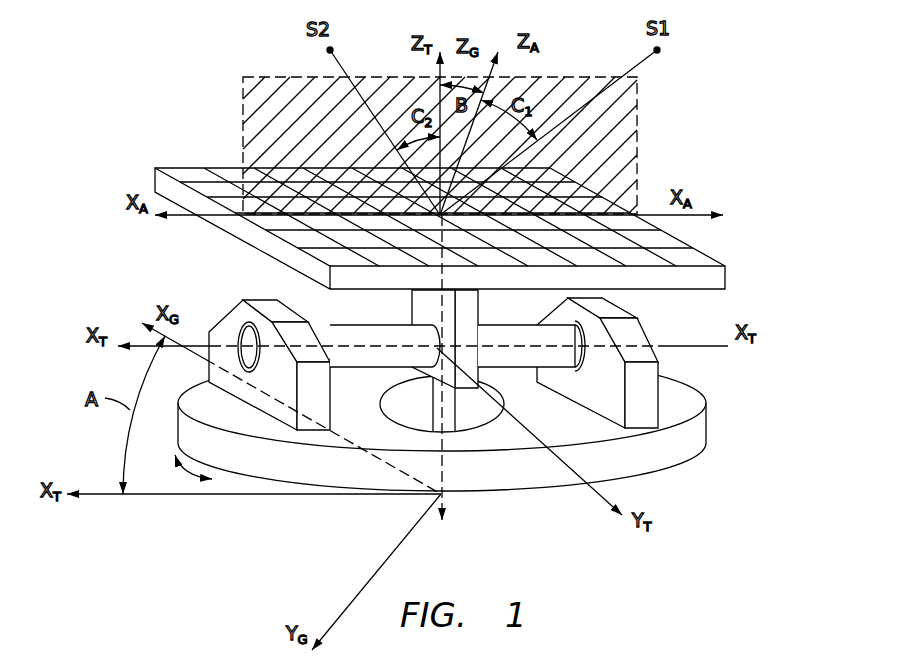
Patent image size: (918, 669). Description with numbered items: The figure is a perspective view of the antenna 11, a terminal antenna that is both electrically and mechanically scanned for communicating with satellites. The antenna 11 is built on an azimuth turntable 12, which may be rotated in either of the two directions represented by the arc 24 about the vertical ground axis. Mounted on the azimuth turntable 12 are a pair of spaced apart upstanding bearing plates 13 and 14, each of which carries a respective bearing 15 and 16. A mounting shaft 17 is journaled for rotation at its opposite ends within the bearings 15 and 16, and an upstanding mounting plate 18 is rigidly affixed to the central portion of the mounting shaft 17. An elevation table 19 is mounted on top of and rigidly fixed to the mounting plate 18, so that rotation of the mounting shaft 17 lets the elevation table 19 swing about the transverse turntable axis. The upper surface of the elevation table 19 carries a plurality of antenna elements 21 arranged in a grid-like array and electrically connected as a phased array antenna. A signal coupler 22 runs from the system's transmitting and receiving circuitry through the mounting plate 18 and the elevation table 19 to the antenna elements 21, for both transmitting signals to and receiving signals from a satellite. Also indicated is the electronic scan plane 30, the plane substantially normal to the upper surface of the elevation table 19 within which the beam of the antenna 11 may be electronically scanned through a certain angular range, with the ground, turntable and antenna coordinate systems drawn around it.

The antenna 11 is at (485, 212).
The azimuth turntable 12 is at (693, 430).
The bearing plate 13 is at (660, 364).
The bearing plate 14 is at (323, 382).
The bearing 15 is at (588, 340).
The bearing 16 is at (242, 340).
The mounting shaft 17 is at (513, 353).
The upstanding mounting plate 18 is at (468, 393).
The elevation table 19 is at (718, 276).
The antenna elements 21 is at (182, 170).
The signal coupler 22 is at (455, 442).
The arc 24 is at (187, 465).
The electronic scan plane 30 is at (627, 115).